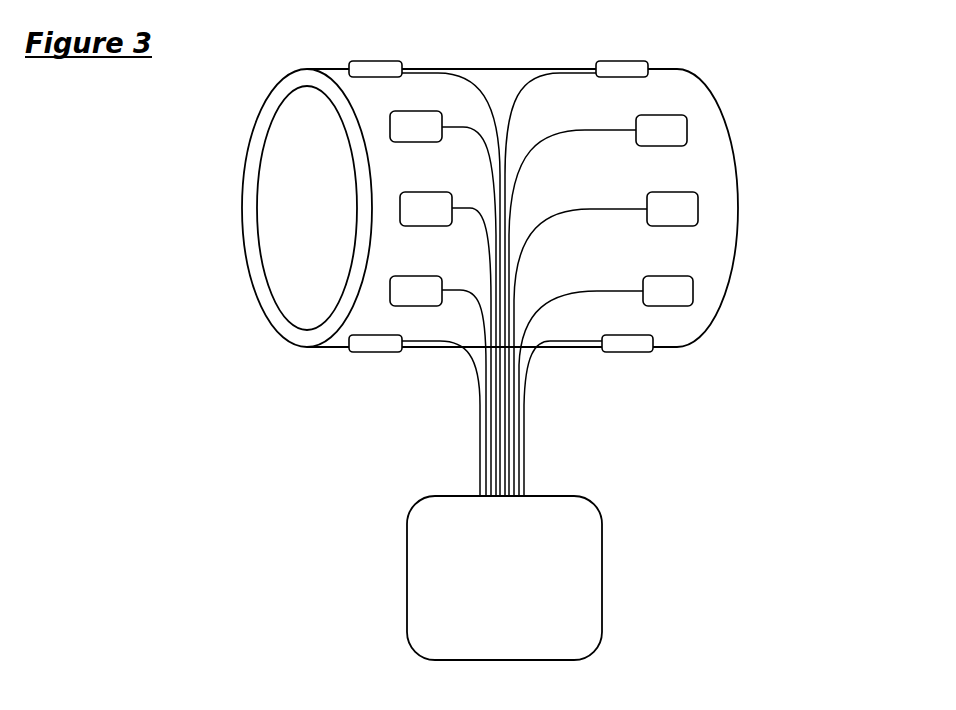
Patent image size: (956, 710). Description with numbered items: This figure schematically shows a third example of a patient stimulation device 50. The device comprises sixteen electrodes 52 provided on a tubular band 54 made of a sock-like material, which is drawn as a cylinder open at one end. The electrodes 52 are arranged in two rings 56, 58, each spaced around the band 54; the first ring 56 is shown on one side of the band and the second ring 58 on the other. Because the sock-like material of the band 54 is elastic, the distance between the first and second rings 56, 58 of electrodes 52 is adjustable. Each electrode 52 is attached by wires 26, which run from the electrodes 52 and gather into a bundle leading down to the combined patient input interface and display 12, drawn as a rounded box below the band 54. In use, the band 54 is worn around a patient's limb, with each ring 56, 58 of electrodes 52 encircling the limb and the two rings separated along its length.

The combined patient input interface and display 12 is at (433, 591).
The wires 26 is at (480, 437).
The patient stimulation device 50 is at (444, 238).
The electrodes 52 is at (680, 293).
The tubular band 54 is at (703, 161).
The first ring 56 is at (345, 365).
The second ring 58 is at (709, 238).